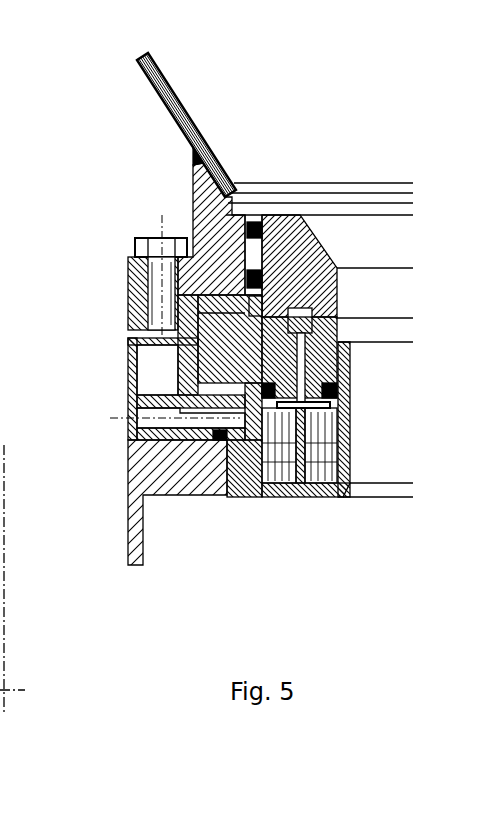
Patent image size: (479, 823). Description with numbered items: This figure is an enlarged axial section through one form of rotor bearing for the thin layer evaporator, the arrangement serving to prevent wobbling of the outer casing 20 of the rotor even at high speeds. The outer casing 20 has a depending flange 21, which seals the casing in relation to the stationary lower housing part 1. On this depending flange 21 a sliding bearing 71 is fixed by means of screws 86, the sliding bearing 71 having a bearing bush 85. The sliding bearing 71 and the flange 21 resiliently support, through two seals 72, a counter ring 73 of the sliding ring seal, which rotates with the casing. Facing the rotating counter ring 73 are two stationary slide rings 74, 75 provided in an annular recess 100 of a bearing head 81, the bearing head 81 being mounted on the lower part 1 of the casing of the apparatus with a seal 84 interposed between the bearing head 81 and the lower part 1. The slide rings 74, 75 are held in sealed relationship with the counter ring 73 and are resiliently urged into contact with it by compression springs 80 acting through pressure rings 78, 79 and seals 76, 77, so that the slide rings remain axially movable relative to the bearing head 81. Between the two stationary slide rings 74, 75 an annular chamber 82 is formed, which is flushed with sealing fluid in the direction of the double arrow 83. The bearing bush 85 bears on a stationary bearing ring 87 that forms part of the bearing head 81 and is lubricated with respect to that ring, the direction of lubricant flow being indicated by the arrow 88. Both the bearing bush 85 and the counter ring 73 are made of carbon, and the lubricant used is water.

The lower housing part 1 is at (134, 566).
The outer casing 20 is at (182, 98).
The depending flange 21 is at (247, 185).
The sliding bearing 71 is at (130, 317).
The seals 72 is at (261, 272).
The counter ring 73 is at (325, 255).
The stationary slide ring 74 is at (396, 267).
The stationary slide ring 75 is at (350, 345).
The seal 76 is at (258, 442).
The seal 77 is at (352, 388).
The pressure ring 78 is at (293, 420).
The pressure ring 79 is at (350, 418).
The compression springs 80 is at (345, 494).
The bearing head 81 is at (317, 494).
The annular chamber 82 is at (262, 300).
The double arrow 83 is at (300, 530).
The seal 84 is at (220, 447).
The bearing bush 85 is at (190, 355).
The screws 86 is at (153, 238).
The bearing ring 87 is at (177, 298).
The arrow 88 is at (127, 393).
The annular recess 100 is at (352, 362).